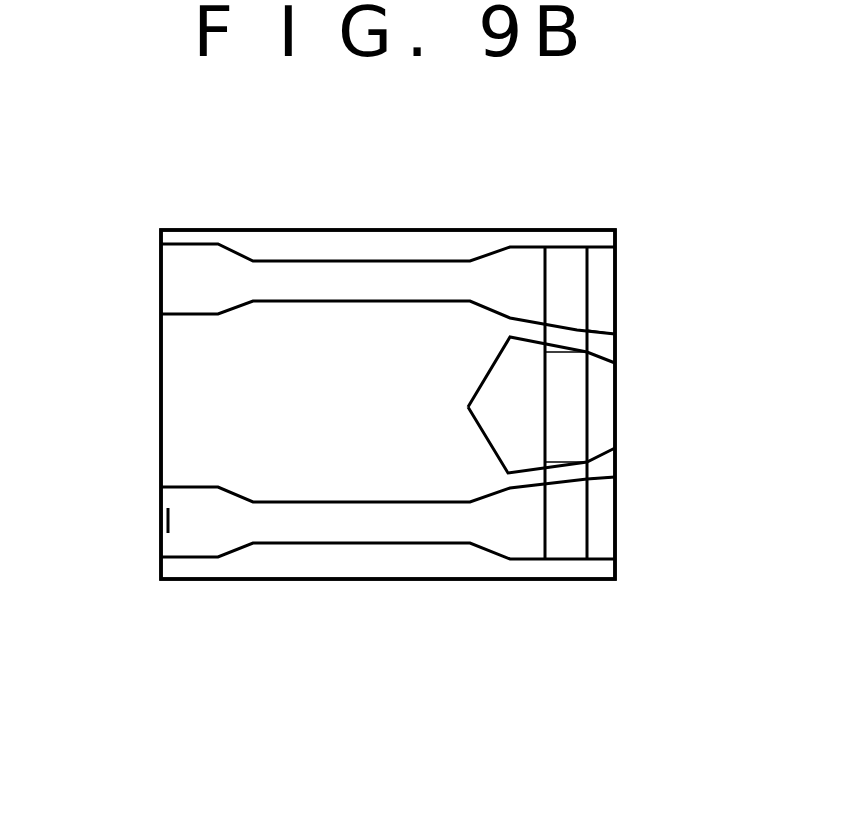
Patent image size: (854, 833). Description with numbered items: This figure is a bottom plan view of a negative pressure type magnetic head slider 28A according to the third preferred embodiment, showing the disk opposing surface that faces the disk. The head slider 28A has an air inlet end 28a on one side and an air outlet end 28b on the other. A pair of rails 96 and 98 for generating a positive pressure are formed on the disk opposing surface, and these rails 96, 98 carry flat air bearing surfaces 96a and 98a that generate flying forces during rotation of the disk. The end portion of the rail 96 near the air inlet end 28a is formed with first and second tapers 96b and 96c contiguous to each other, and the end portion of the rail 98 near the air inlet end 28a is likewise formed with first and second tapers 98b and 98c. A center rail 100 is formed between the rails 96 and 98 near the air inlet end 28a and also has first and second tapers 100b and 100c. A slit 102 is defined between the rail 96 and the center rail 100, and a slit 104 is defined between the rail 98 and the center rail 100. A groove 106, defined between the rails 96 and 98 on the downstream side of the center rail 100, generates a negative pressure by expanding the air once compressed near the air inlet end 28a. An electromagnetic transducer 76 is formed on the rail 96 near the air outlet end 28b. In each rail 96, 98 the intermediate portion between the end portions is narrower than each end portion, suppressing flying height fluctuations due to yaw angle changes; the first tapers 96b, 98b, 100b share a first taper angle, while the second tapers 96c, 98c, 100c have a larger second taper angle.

The head slider 28A is at (450, 229).
The air inlet end 28a is at (615, 345).
The air outlet end 28b is at (160, 404).
The electromagnetic transducer 76 is at (165, 522).
The rail 96 is at (383, 548).
The air bearing surface 96a is at (290, 528).
The first taper 96b is at (565, 553).
The second taper 96c is at (600, 537).
The rail 98 is at (363, 260).
The air bearing surface 98a is at (290, 284).
The first taper 98b is at (569, 262).
The second taper 98c is at (604, 266).
The center rail 100 is at (465, 405).
The first taper 100b is at (585, 435).
The second taper 100c is at (600, 390).
The slit 102 is at (585, 470).
The slit 104 is at (593, 336).
The groove 106 is at (312, 398).